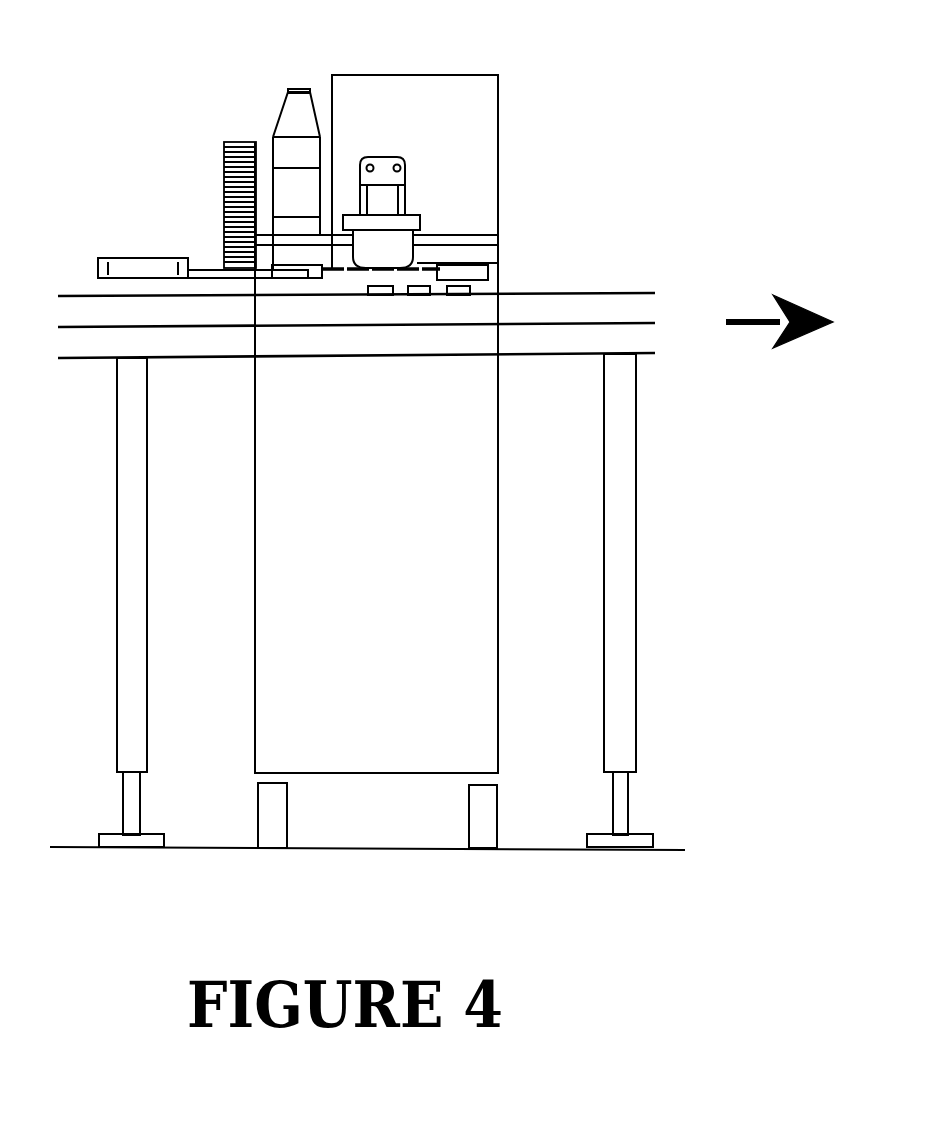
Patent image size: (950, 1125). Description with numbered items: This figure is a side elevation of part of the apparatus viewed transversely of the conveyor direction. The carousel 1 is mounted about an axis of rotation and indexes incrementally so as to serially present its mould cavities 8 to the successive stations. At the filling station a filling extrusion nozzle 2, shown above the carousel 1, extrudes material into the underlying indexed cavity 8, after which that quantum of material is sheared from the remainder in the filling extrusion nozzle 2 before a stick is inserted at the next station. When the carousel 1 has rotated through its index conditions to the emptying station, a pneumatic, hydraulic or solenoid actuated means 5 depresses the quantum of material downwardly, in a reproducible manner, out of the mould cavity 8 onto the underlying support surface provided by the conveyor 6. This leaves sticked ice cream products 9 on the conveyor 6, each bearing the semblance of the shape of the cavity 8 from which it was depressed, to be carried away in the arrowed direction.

The carousel 1 is at (337, 273).
The filling extrusion nozzle 2 is at (277, 158).
The actuated means 5 is at (405, 183).
The conveyor 6 is at (583, 292).
The mould cavities 8 is at (310, 270).
The sticked ice cream products 9 is at (567, 381).